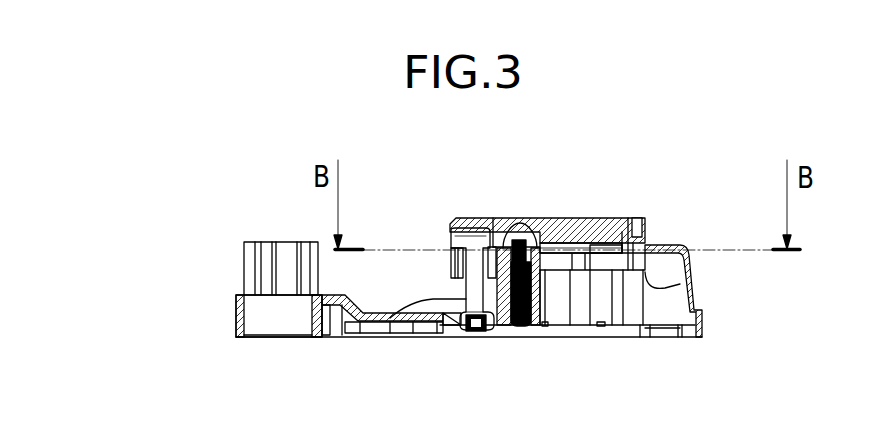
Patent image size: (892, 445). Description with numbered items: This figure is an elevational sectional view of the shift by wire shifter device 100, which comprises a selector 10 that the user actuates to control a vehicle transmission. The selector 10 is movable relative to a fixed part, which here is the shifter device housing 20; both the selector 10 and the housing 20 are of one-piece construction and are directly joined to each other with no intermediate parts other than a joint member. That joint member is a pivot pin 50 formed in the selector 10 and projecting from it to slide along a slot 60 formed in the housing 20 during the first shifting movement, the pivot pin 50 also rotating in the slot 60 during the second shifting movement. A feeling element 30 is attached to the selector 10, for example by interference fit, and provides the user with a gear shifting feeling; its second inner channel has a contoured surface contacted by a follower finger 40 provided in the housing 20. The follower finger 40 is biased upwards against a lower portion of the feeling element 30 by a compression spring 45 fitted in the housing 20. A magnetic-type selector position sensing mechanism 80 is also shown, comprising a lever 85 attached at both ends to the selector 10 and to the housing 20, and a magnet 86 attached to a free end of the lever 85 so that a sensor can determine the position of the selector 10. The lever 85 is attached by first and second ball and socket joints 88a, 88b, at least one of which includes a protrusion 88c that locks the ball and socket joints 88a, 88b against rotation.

The shift by wire shifter device 100 is at (654, 205).
The selector 10 is at (477, 222).
The shifter device housing 20 is at (313, 332).
The feeling element 30 is at (503, 227).
The follower finger 40 is at (527, 227).
The compression spring 45 is at (523, 327).
The pivot pin 50 is at (680, 284).
The slot 60 is at (615, 265).
The selector position sensing mechanism 80 is at (435, 269).
The lever 85 is at (387, 320).
The magnet 86 is at (477, 332).
The first ball and socket joint 88a is at (440, 323).
The second ball and socket joint 88b is at (442, 229).
The protrusion 88c is at (450, 243).